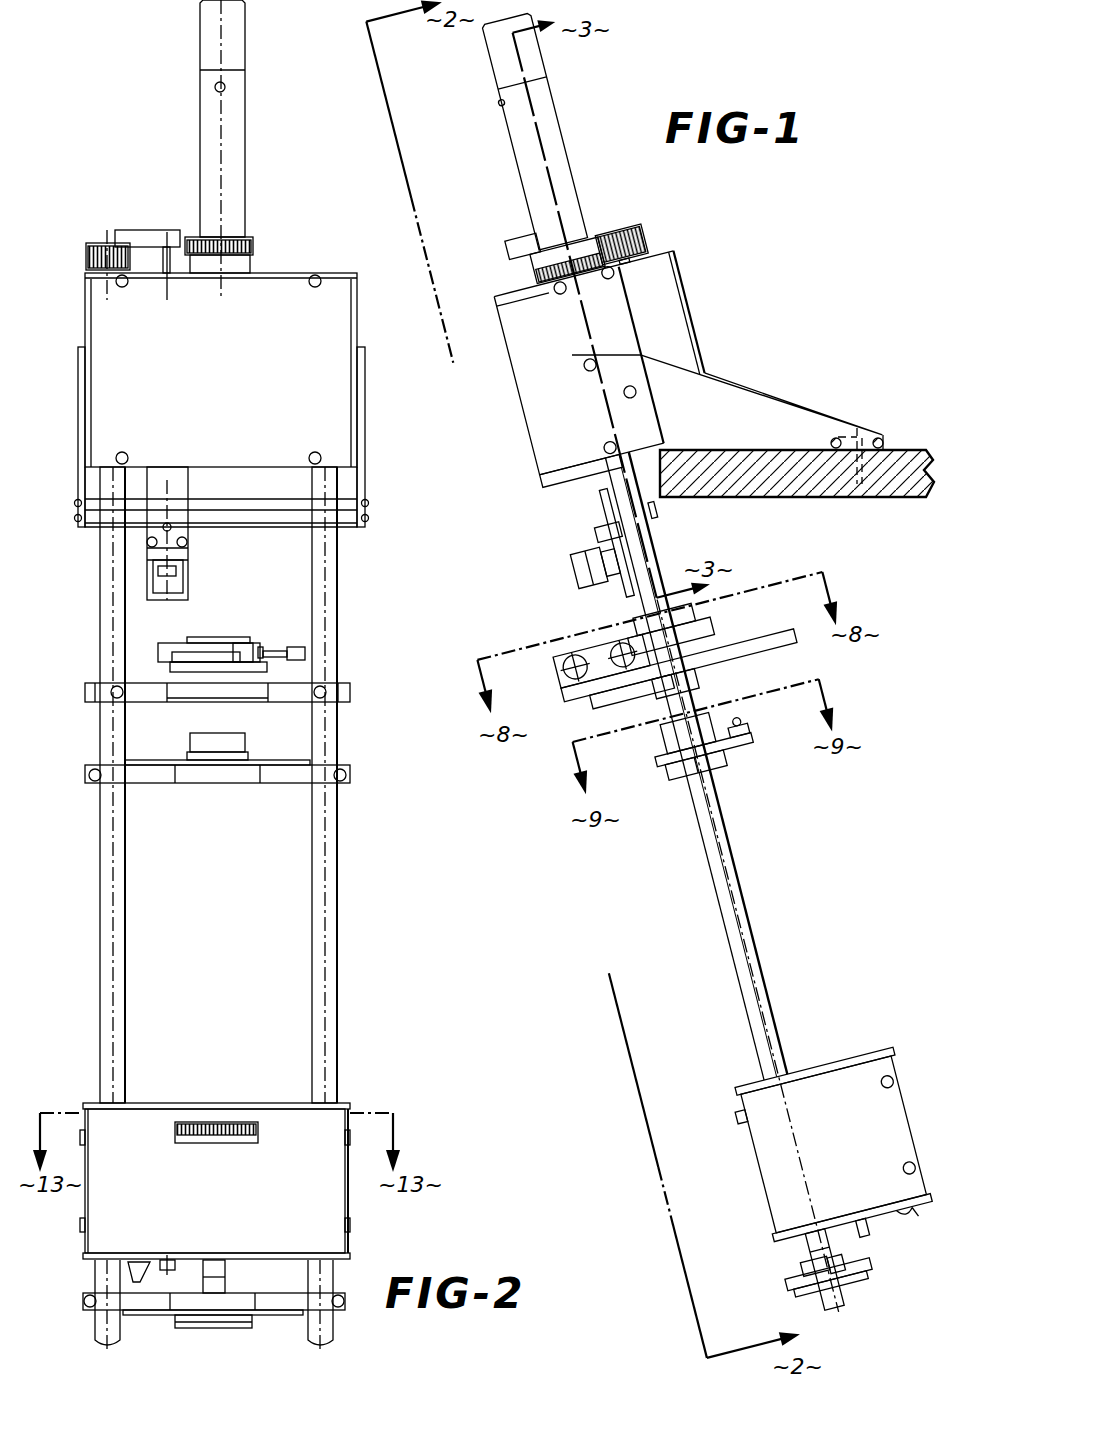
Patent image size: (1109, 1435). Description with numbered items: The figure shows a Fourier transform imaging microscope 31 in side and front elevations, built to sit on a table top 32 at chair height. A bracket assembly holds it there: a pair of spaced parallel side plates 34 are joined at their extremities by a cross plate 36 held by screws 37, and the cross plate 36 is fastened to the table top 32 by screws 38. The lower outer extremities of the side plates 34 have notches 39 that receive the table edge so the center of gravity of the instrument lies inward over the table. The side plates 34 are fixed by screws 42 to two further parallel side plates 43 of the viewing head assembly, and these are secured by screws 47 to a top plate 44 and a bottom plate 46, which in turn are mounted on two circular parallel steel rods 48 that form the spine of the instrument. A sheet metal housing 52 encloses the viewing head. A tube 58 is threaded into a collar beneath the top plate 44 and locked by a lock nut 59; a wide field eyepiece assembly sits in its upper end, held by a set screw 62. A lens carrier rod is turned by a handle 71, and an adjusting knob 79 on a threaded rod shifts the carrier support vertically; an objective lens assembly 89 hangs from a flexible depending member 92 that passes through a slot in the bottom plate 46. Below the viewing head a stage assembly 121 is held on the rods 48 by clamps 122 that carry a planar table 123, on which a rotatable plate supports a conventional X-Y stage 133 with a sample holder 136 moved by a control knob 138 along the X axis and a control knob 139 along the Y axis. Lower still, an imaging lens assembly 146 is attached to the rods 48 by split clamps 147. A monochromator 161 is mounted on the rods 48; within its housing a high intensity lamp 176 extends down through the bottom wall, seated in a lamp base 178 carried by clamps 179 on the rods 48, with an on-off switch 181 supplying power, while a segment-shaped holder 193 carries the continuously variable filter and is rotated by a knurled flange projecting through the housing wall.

In FIG. 2, the Fourier transform imaging microscope 31 is at (177, 120).
In FIG. 1, the Fourier transform imaging microscope 31 is at (652, 208).
In FIG. 1, the table top 32 is at (905, 452).
In FIG. 2, the side plates 34 is at (80, 486).
In FIG. 1, the side plates 34 is at (769, 411).
In FIG. 2, the cross plate 36 is at (254, 526).
In FIG. 1, the cross plate 36 is at (879, 438).
In FIG. 2, the screws 37 is at (367, 521).
In FIG. 1, the screws 37 is at (836, 438).
In FIG. 1, the screws 38 is at (859, 435).
In FIG. 1, the recesses or notches 39 is at (738, 449).
In FIG. 1, the screws 42 is at (585, 368).
In FIG. 2, the side plates 43 is at (357, 325).
In FIG. 1, the side plates 43 is at (566, 322).
In FIG. 1, the top plate 44 is at (497, 302).
In FIG. 1, the bottom plate 46 is at (571, 483).
In FIG. 1, the screws 47 is at (555, 288).
In FIG. 2, the rods or rails 48 is at (120, 930).
In FIG. 1, the rods or rails 48 is at (701, 836).
In FIG. 2, the sheet metal housing 52 is at (300, 278).
In FIG. 2, the tube 58 is at (237, 169).
In FIG. 1, the tube 58 is at (556, 124).
In FIG. 2, the lock nut 59 is at (250, 250).
In FIG. 1, the lock nut 59 is at (567, 260).
In FIG. 1, the set screw 62 is at (500, 108).
In FIG. 2, the handle 71 is at (140, 231).
In FIG. 1, the handle 71 is at (512, 244).
In FIG. 2, the adjusting knob 79 is at (92, 255).
In FIG. 1, the adjusting knob 79 is at (643, 236).
In FIG. 2, the objective lens assembly 89 is at (177, 594).
In FIG. 1, the objective lens assembly 89 is at (572, 561).
In FIG. 2, the flexible depending member 92 is at (166, 596).
In FIG. 1, the flexible depending member 92 is at (617, 592).
In FIG. 2, the stage assembly 121 is at (297, 640).
In FIG. 1, the stage assembly 121 is at (733, 630).
In FIG. 2, the clamps 122 is at (96, 703).
In FIG. 1, the clamps 122 is at (650, 695).
In FIG. 2, the table or plate 123 is at (196, 687).
In FIG. 1, the table or plate 123 is at (794, 641).
In FIG. 2, the X-Y stage 133 is at (259, 650).
In FIG. 2, the sample holder 136 is at (233, 640).
In FIG. 1, the control knob 138 is at (562, 668).
In FIG. 1, the control knob 139 is at (598, 684).
In FIG. 2, the imaging lens assembly 146 is at (211, 768).
In FIG. 1, the imaging lens assembly 146 is at (734, 752).
In FIG. 2, the split clamps 147 is at (106, 782).
In FIG. 1, the split clamps 147 is at (714, 773).
In FIG. 2, the monochromator 161 is at (355, 1107).
In FIG. 1, the monochromator 161 is at (830, 1048).
In FIG. 2, the high intensity lamp 176 is at (223, 1262).
In FIG. 1, the high intensity lamp 176 is at (824, 1269).
In FIG. 2, the lamp base 178 is at (205, 1328).
In FIG. 1, the lamp base 178 is at (803, 1296).
In FIG. 2, the clamps 179 is at (100, 1306).
In FIG. 1, the clamps 179 is at (806, 1270).
In FIG. 2, the on-off switch 181 is at (135, 1265).
In FIG. 1, the on-off switch 181 is at (868, 1232).
In FIG. 2, the holder 193 is at (250, 1122).
In FIG. 1, the holder 193 is at (733, 1119).